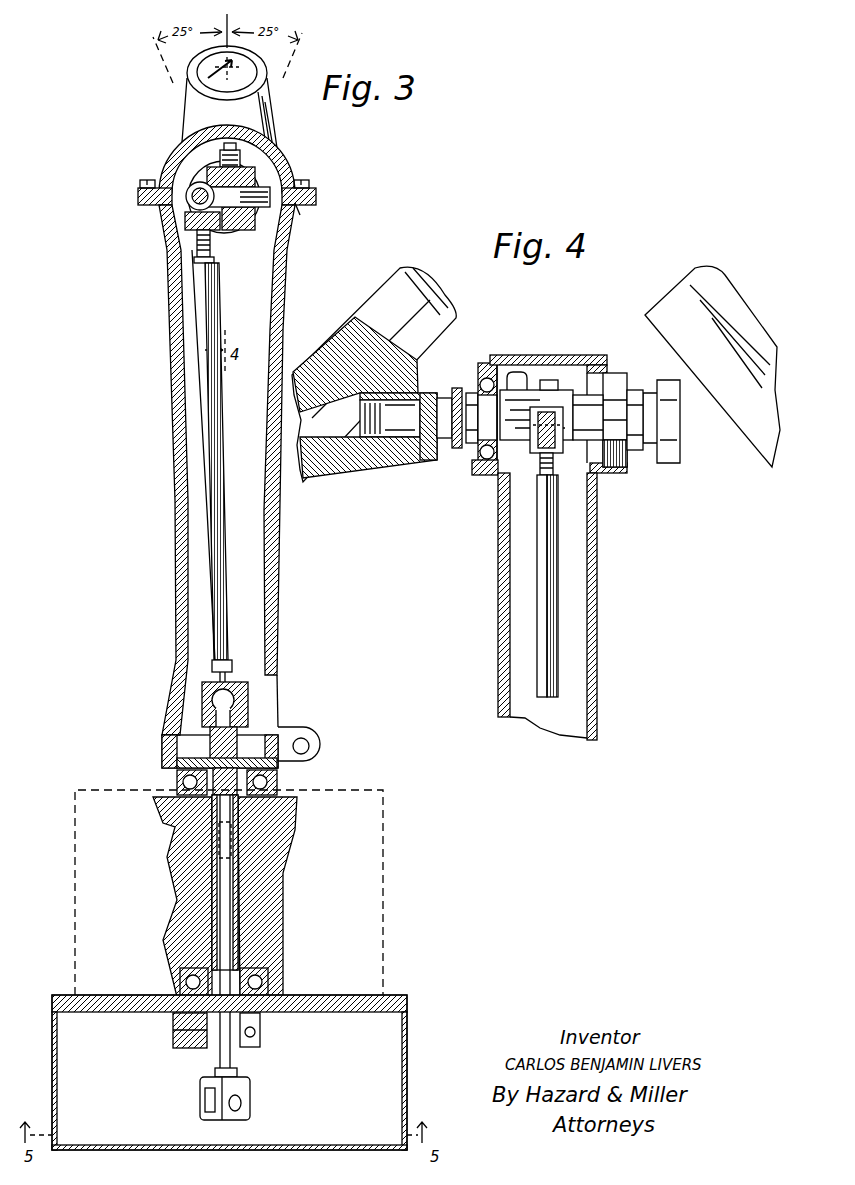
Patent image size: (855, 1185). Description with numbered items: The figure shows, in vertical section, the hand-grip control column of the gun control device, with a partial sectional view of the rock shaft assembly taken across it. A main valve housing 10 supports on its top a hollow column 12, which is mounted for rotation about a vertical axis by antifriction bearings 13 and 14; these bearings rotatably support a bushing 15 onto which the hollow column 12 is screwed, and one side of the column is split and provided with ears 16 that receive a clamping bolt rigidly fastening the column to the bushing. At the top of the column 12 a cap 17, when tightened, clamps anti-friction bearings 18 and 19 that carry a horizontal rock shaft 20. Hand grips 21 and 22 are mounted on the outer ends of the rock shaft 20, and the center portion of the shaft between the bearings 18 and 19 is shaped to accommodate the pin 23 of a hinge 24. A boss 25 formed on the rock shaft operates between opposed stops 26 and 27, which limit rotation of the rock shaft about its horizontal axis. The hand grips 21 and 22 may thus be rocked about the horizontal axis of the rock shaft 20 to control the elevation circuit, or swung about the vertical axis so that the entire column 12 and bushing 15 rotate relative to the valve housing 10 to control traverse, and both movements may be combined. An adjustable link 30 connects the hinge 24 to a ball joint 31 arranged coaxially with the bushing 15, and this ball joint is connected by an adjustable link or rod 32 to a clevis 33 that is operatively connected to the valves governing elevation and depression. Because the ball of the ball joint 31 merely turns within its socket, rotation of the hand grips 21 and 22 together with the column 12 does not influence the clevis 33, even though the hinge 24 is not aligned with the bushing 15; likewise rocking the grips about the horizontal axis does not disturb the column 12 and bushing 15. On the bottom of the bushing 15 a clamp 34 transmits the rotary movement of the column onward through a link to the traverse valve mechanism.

In FIG. 3, the main valve housing 10 is at (75, 806).
In FIG. 3, the hollow column 12 is at (175, 576).
In FIG. 4, the hollow column 12 is at (498, 589).
In FIG. 3, the antifriction bearing 13 is at (275, 782).
In FIG. 3, the antifriction bearing 14 is at (270, 980).
In FIG. 3, the bushing 15 is at (268, 914).
In FIG. 3, the ears 16 is at (316, 745).
In FIG. 3, the cap 17 is at (280, 177).
In FIG. 4, the cap 17 is at (553, 355).
In FIG. 4, the anti-friction bearing 18 is at (486, 376).
In FIG. 4, the anti-friction bearing 19 is at (612, 382).
In FIG. 3, the rock shaft 20 is at (237, 210).
In FIG. 4, the rock shaft 20 is at (487, 423).
In FIG. 3, the hand grip 21 is at (205, 122).
In FIG. 4, the hand grip 21 is at (375, 300).
In FIG. 4, the hand grip 22 is at (760, 300).
In FIG. 3, the pin 23 is at (310, 214).
In FIG. 3, the hinge 24 is at (185, 214).
In FIG. 4, the hinge 24 is at (535, 448).
In FIG. 3, the boss 25 is at (235, 137).
In FIG. 4, the boss 25 is at (512, 372).
In FIG. 3, the stop 26 is at (264, 167).
In FIG. 3, the stop 27 is at (178, 160).
In FIG. 3, the adjustable link 30 is at (207, 465).
In FIG. 4, the adjustable link 30 is at (540, 693).
In FIG. 3, the ball joint 31 is at (205, 698).
In FIG. 3, the adjustable link or rod 32 is at (232, 870).
In FIG. 3, the clevis 33 is at (243, 1090).
In FIG. 3, the clamp 34 is at (262, 1022).